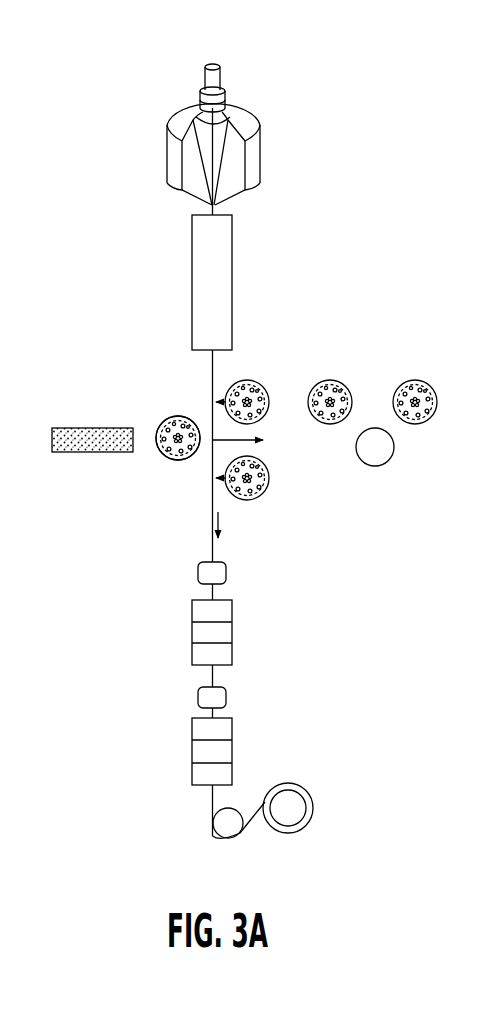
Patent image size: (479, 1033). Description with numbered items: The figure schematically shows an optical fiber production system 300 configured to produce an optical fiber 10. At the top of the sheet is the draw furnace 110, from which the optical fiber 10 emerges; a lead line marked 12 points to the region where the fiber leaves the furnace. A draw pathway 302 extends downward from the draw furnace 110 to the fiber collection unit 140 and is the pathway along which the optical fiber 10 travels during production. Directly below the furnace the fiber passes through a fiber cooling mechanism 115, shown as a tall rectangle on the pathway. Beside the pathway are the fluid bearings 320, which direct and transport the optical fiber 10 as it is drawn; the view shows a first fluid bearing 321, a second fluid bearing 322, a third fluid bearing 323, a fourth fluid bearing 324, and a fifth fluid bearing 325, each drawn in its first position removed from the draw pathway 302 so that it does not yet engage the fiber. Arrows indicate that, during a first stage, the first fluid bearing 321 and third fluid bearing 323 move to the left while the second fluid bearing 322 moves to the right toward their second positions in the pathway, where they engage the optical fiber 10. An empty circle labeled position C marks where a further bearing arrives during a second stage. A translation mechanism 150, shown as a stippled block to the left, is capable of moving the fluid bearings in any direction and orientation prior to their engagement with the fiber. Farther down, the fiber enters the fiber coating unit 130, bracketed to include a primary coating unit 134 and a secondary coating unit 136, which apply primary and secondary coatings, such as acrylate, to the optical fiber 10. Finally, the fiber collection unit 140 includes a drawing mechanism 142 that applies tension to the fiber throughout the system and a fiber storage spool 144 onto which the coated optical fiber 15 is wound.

The optical fiber production system 300 is at (295, 75).
The draw furnace 110 is at (257, 130).
The spinneret orifice 12 is at (215, 130).
The optical fiber 10 is at (204, 205).
The fiber cooling mechanism 115 is at (222, 270).
The translation mechanism 150 is at (58, 428).
The fluid bearings 320 is at (156, 430).
The second fluid bearing 322 is at (163, 418).
The first fluid bearing 321 is at (262, 384).
The third fluid bearing 323 is at (265, 466).
The fourth fluid bearing 324 is at (345, 384).
The fifth fluid bearing 325 is at (430, 384).
The position C is at (372, 443).
The draw pathway 302 is at (206, 527).
The fiber coating unit 130 is at (178, 555).
The primary coating unit 134 is at (222, 635).
The secondary coating unit 136 is at (222, 748).
The coated optical fiber 15 is at (204, 807).
The drawing mechanism 142 is at (228, 826).
The fiber storage spool 144 is at (288, 812).
The fiber collection unit 140 is at (284, 870).